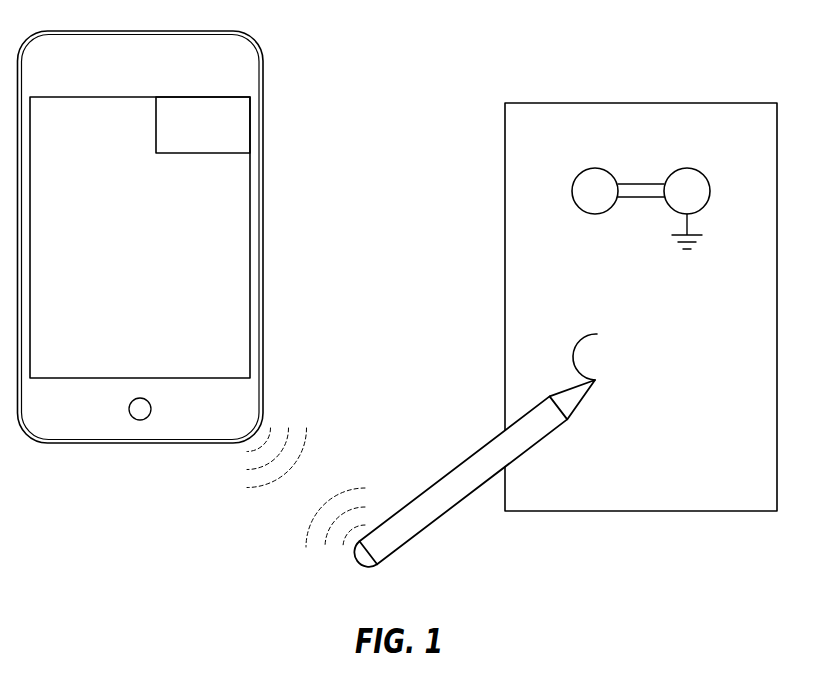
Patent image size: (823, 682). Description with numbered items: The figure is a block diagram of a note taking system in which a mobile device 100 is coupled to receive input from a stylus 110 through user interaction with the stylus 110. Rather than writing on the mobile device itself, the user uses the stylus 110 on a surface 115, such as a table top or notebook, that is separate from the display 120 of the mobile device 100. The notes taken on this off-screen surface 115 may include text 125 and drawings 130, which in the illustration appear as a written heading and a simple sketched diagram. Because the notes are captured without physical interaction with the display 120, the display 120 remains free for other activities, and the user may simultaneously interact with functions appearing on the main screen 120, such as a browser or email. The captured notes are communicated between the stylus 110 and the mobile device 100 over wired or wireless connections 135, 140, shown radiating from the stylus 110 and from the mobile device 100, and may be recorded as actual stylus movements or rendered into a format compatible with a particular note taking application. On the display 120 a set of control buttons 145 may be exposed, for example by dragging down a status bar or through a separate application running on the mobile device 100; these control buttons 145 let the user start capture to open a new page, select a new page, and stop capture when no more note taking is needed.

The mobile device 100 is at (141, 30).
The stylus 110 is at (441, 516).
The surface 115 is at (505, 264).
The display 120 is at (235, 234).
The text 125 is at (643, 123).
The drawings 130 is at (711, 189).
The wireless connection 135 is at (310, 527).
The wireless connection 140 is at (300, 453).
The control buttons 145 is at (156, 124).